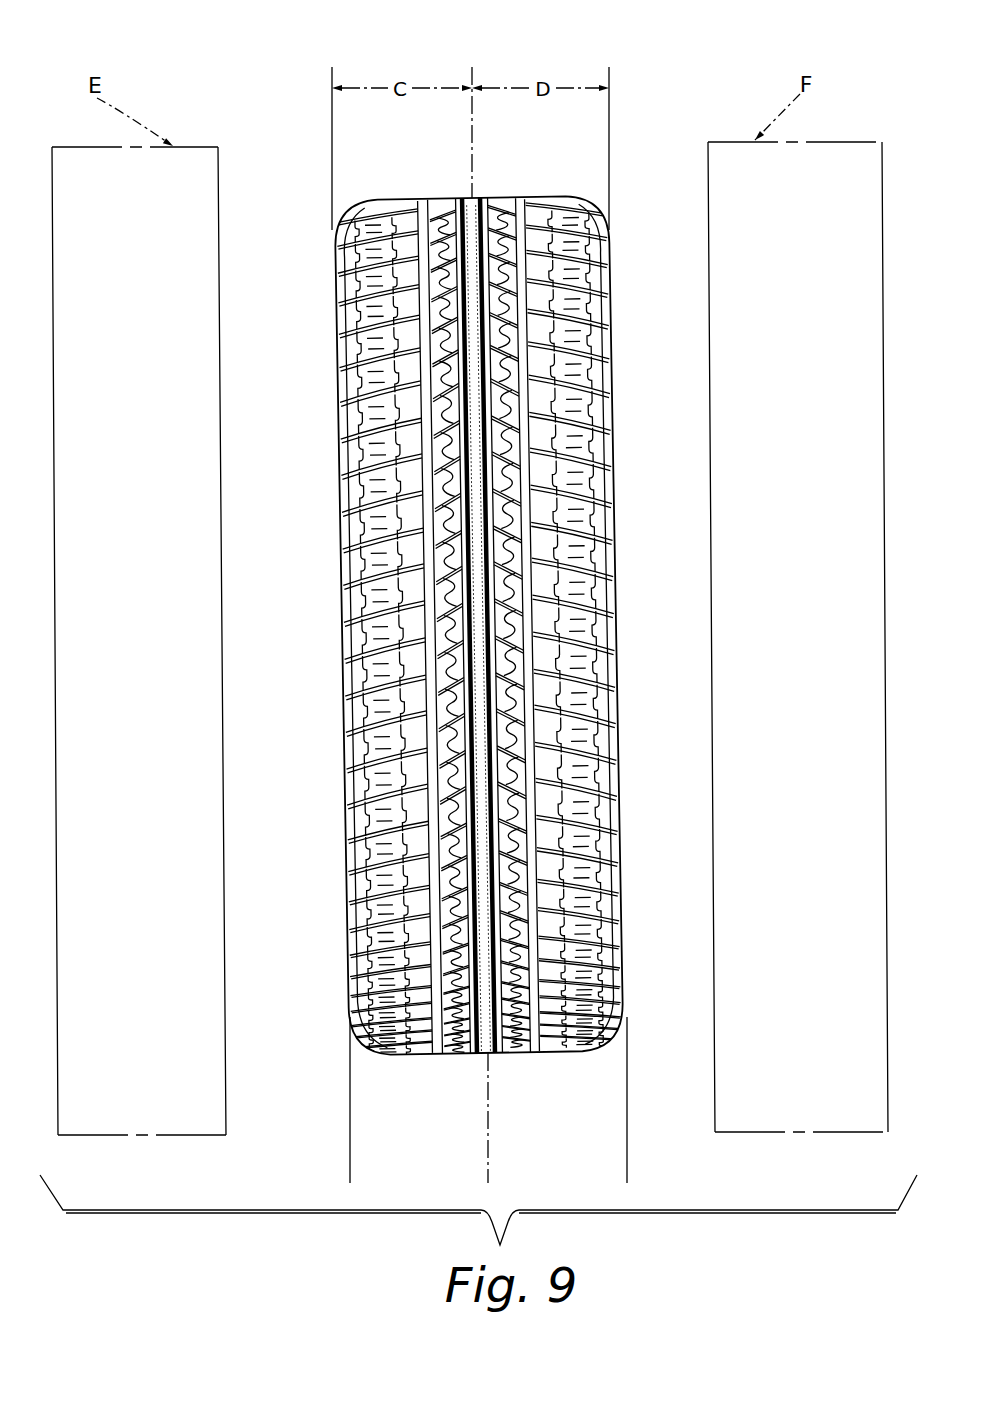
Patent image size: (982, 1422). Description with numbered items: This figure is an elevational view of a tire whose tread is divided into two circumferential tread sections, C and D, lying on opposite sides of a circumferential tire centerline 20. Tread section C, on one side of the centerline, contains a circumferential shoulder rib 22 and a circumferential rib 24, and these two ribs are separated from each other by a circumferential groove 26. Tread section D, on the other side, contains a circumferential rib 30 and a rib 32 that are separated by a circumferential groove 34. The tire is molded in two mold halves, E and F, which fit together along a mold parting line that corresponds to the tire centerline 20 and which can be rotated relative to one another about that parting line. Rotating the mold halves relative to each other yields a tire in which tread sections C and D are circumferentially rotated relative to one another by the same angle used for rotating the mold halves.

The circumferential tire centerline 20 is at (478, 70).
The circumferential shoulder rib 22 is at (376, 207).
The circumferential rib 24 is at (442, 200).
The circumferential groove 26 is at (421, 205).
The circumferential rib 30 is at (555, 200).
The rib 32 is at (497, 198).
The circumferential groove 34 is at (525, 203).